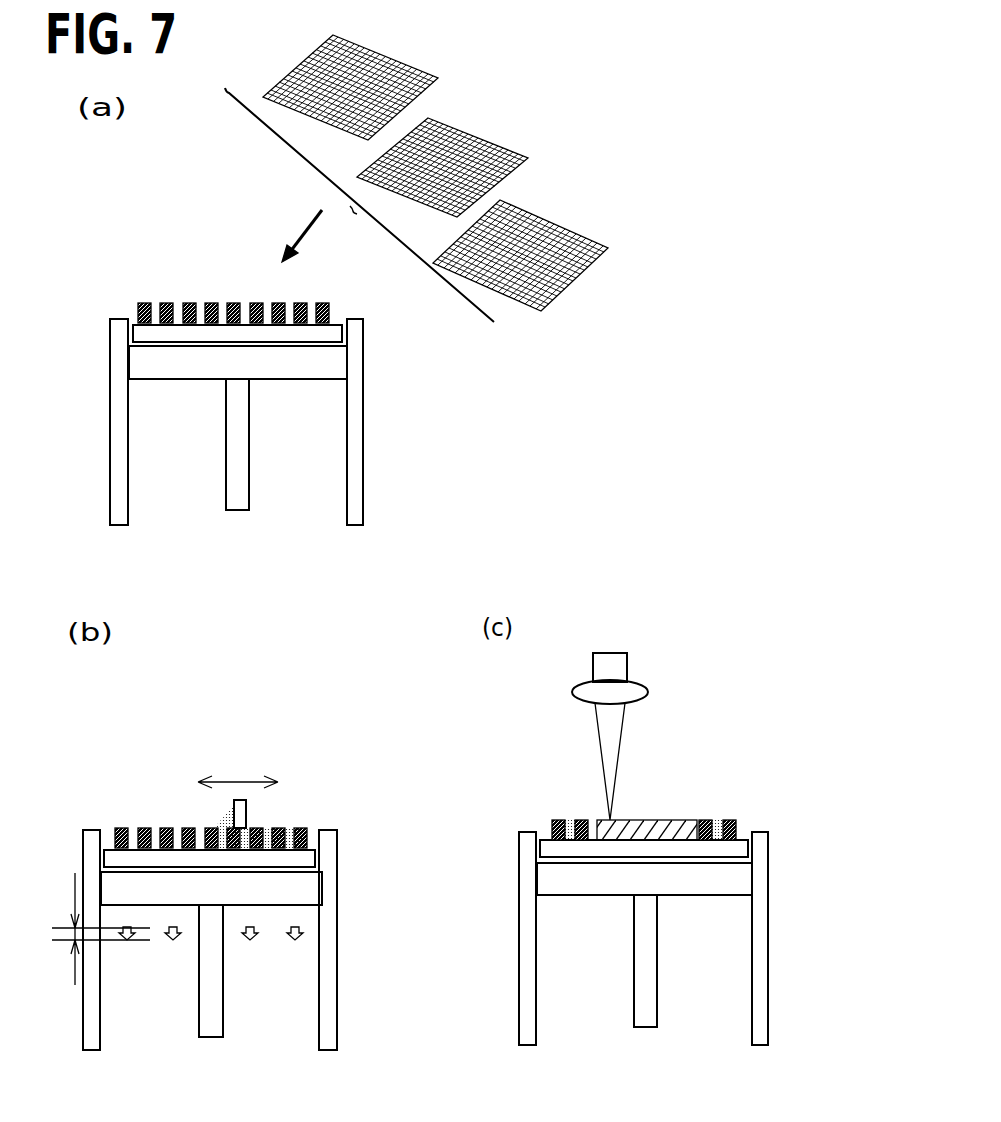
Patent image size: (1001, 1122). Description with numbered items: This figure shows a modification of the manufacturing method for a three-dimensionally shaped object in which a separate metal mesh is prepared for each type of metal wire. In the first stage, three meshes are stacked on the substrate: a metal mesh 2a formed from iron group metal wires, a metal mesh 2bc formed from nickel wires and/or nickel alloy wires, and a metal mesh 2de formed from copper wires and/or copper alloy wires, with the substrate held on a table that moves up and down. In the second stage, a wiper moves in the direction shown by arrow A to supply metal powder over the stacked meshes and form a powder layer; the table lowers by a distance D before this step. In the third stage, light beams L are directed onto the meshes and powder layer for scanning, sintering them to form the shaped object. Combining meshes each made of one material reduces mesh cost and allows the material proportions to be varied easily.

The metal mesh 2a is at (438, 78).
The metal mesh 2bc is at (473, 138).
The metal mesh 2de is at (510, 202).
The light beams L is at (610, 775).
The arrow A is at (238, 765).
The descent distance D is at (87, 929).